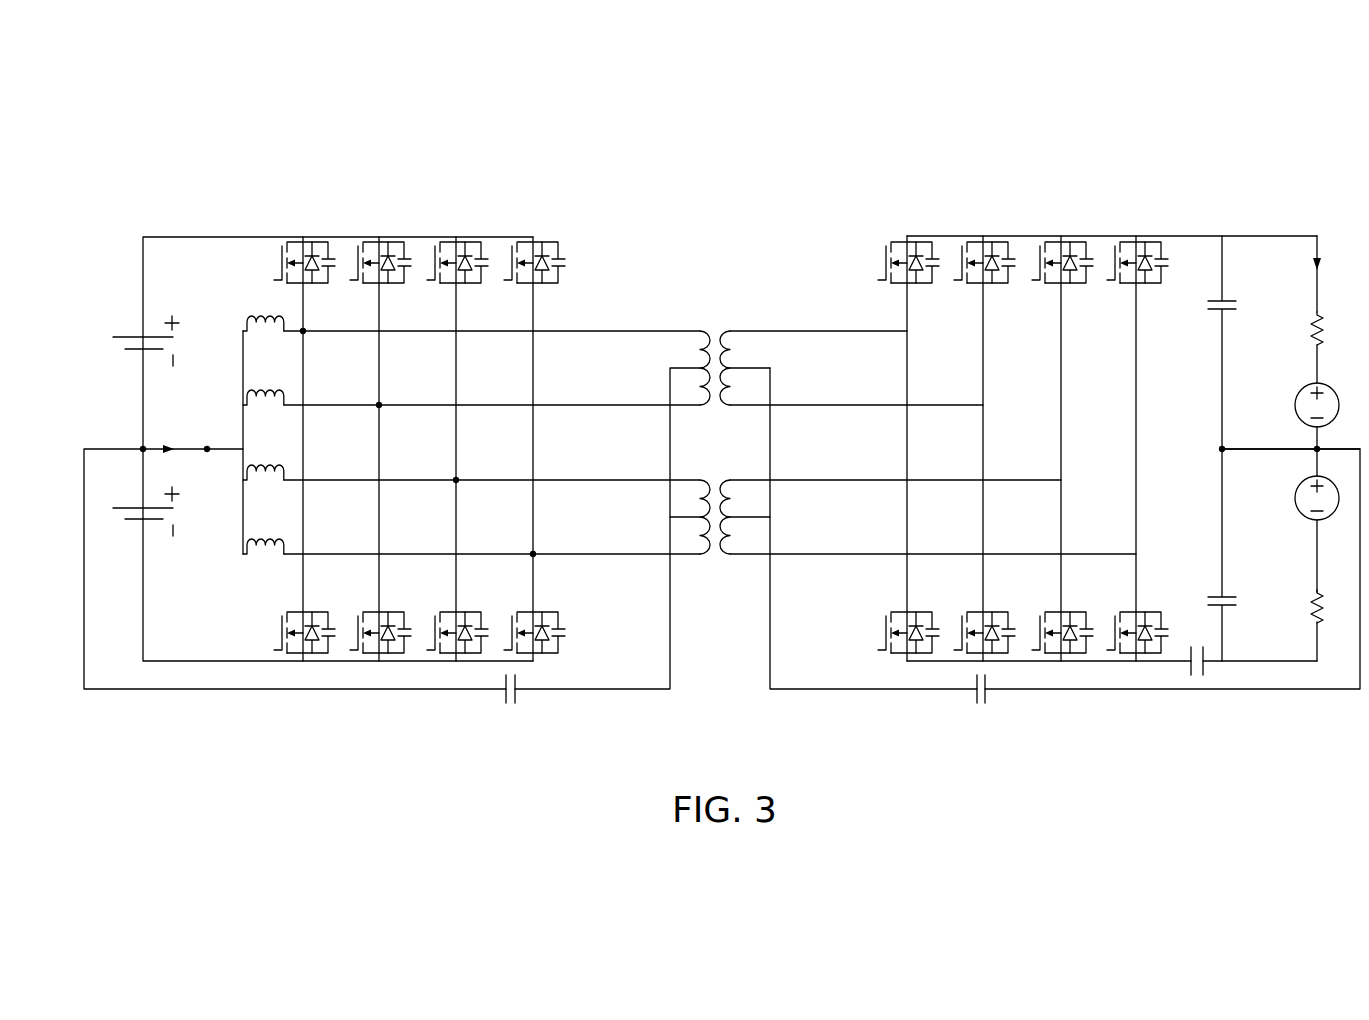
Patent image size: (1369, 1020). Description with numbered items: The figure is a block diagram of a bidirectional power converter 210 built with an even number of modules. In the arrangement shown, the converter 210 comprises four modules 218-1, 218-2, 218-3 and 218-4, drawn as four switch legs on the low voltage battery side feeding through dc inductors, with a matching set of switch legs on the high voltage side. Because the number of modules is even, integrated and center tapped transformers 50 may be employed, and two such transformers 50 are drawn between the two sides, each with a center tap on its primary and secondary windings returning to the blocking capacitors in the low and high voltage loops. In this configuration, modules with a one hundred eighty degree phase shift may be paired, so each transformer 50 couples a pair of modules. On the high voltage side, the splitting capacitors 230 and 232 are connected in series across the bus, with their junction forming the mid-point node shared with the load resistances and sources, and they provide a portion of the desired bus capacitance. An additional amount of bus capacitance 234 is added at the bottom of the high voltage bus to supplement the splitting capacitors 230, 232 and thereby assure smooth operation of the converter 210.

The converter 210 is at (244, 157).
The module 218-1 is at (313, 239).
The module 218-2 is at (393, 239).
The module 218-3 is at (470, 239).
The module 218-4 is at (547, 239).
The integrated and center tapped transformers 50 is at (710, 405).
The splitting capacitor 230 is at (1232, 300).
The splitting capacitor 232 is at (1232, 597).
The additional bus capacitance 234 is at (1203, 668).